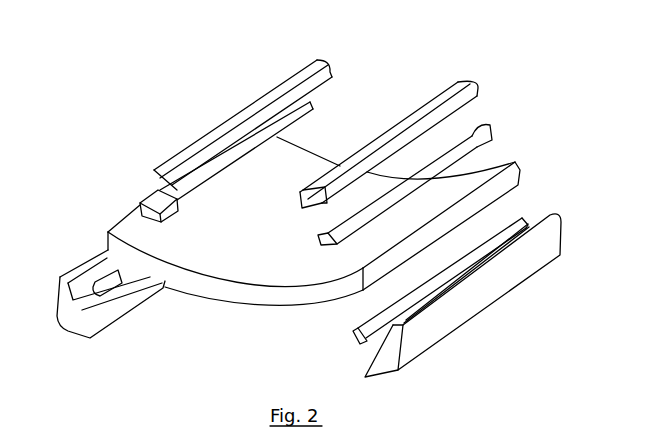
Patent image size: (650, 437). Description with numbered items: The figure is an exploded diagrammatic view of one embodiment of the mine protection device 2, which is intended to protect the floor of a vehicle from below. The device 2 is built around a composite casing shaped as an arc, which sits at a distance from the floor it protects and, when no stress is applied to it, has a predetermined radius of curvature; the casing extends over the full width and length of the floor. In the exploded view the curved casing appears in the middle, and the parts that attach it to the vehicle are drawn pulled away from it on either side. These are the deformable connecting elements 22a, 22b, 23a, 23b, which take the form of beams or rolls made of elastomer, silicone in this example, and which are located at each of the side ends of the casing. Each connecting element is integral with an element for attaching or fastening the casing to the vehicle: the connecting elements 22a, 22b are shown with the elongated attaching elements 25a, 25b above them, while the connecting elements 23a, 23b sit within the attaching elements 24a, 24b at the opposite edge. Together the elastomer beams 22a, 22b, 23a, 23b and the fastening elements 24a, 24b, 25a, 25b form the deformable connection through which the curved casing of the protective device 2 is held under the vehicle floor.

The mine protection device 2 is at (492, 165).
The deformable connecting element 22a is at (478, 124).
The deformable connecting element 22b is at (153, 190).
The deformable connecting element 23a is at (353, 341).
The deformable connecting element 23b is at (120, 283).
The attaching element 24a is at (383, 363).
The attaching element 24b is at (70, 313).
The attaching element 25a is at (462, 81).
The attaching element 25b is at (285, 80).